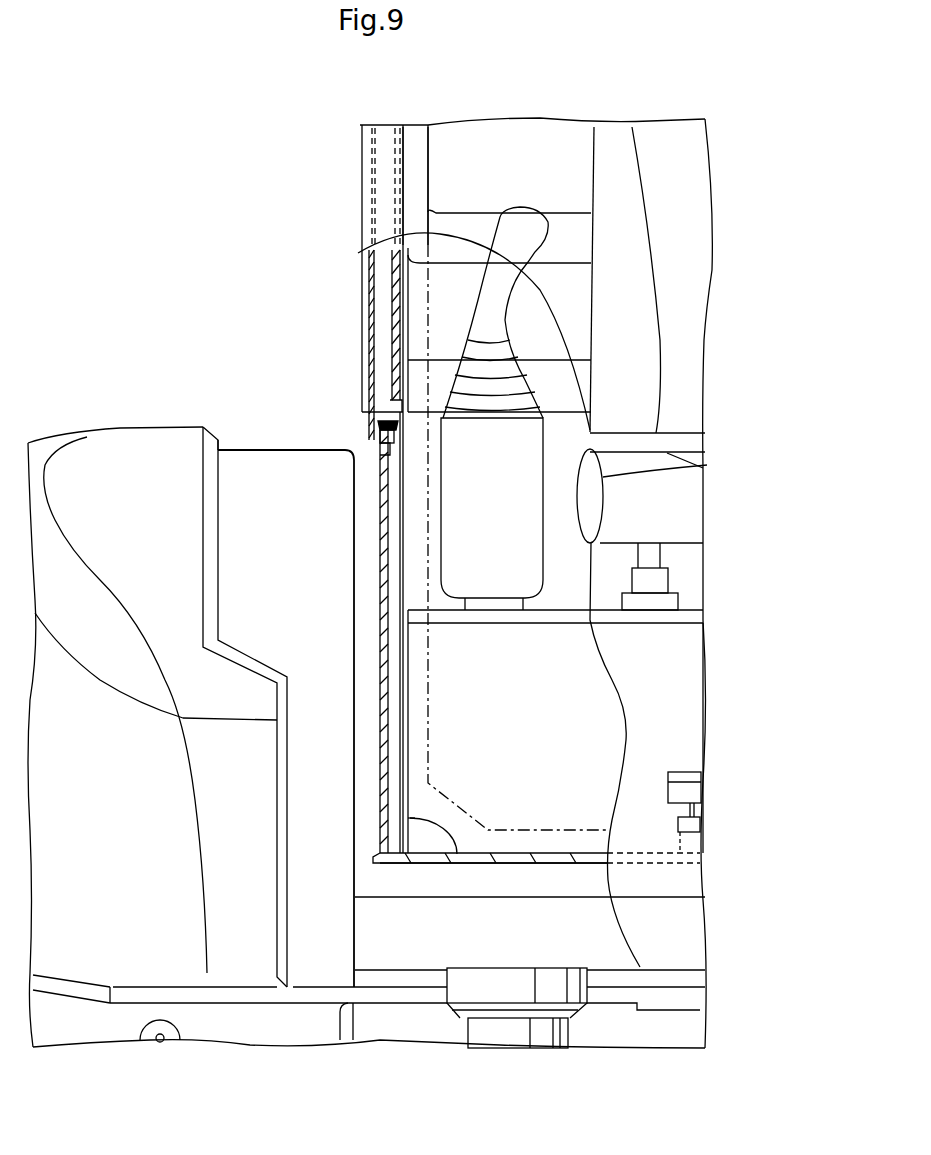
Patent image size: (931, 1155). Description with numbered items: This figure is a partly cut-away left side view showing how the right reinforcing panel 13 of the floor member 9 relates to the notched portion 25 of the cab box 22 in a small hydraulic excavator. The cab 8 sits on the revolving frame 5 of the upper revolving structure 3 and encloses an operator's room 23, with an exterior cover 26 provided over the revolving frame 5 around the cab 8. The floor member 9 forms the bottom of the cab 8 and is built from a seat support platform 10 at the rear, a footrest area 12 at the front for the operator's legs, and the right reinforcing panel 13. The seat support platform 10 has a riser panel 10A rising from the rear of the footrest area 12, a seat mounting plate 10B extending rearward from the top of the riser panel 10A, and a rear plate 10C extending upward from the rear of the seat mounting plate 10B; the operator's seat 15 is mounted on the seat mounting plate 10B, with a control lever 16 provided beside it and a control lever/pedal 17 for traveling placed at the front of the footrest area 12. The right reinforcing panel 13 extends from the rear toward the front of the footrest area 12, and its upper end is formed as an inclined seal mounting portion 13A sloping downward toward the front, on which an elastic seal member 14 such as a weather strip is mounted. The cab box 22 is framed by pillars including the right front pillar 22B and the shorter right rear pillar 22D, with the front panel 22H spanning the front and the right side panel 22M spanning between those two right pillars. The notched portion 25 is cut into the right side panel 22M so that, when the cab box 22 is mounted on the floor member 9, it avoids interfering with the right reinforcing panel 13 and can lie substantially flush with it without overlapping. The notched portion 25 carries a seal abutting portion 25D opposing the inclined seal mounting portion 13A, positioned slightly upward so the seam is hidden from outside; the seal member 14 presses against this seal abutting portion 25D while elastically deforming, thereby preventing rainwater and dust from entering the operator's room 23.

The upper revolving structure 3 is at (183, 358).
The revolving frame 5 is at (517, 1030).
The cab 8 is at (576, 110).
The floor member 9 is at (503, 870).
The seat support platform 10 is at (675, 667).
The riser panel 10A is at (677, 722).
The seat mounting plate 10B is at (683, 610).
The rear plate 10C is at (567, 553).
The footrest area 12 is at (585, 857).
The right reinforcing panel 13 is at (383, 548).
The inclined seal mounting portion 13A is at (380, 440).
The seal member 14 is at (392, 424).
The operator's seat 15 is at (678, 243).
The control lever 16 is at (523, 228).
The control lever/pedal 17 is at (690, 788).
The cab box 22 is at (358, 143).
The right front pillar 22B is at (385, 202).
The right rear pillar 22D is at (365, 323).
The front panel 22H is at (414, 140).
The right side panel 22M is at (366, 271).
The operator's room 23 is at (685, 568).
The notched portion 25 is at (378, 438).
The seal abutting portion 25D is at (382, 421).
The exterior cover 26 is at (110, 450).